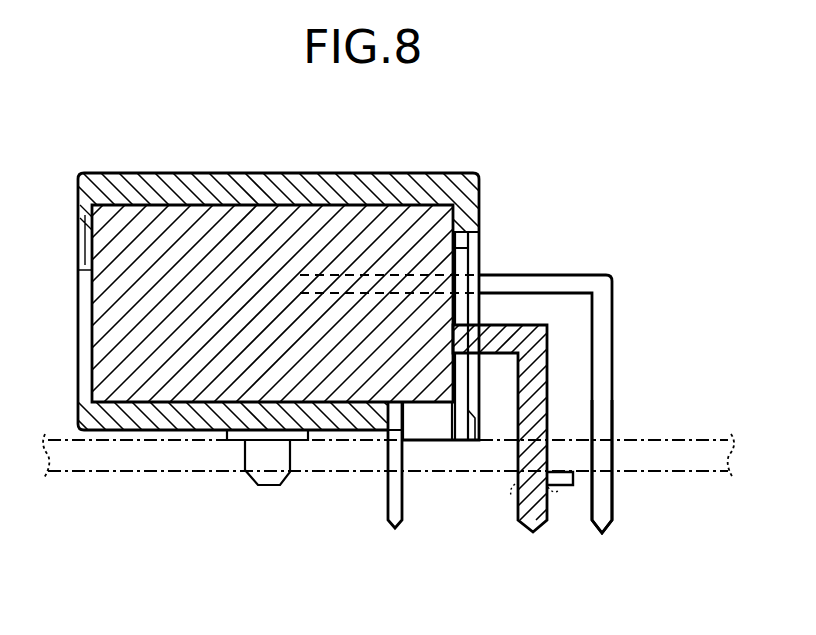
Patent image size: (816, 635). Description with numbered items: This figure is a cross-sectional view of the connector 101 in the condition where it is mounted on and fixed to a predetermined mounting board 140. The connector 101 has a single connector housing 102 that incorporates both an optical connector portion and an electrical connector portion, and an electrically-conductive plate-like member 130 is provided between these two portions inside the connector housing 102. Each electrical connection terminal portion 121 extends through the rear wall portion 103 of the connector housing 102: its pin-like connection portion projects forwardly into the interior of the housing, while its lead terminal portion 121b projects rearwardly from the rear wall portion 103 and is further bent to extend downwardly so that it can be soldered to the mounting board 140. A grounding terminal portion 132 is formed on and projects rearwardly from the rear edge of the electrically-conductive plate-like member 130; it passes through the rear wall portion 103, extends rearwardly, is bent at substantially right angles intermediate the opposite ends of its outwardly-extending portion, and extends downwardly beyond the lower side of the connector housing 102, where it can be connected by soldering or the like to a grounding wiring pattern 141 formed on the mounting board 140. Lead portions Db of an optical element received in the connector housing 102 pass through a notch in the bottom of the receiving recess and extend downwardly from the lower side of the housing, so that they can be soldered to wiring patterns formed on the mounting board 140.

The connector 101 is at (222, 144).
The connector housing 102 is at (380, 173).
The rear wall portion 103 is at (472, 194).
The electrically-conductive plate-like member 130 is at (100, 336).
The electrical connection terminal portion 121 is at (612, 300).
The lead terminal portion 121b is at (612, 412).
The grounding terminal portion 132 is at (547, 355).
The grounding wiring pattern 141 is at (547, 483).
The mounting board 140 is at (698, 473).
The lead portion Db is at (395, 530).